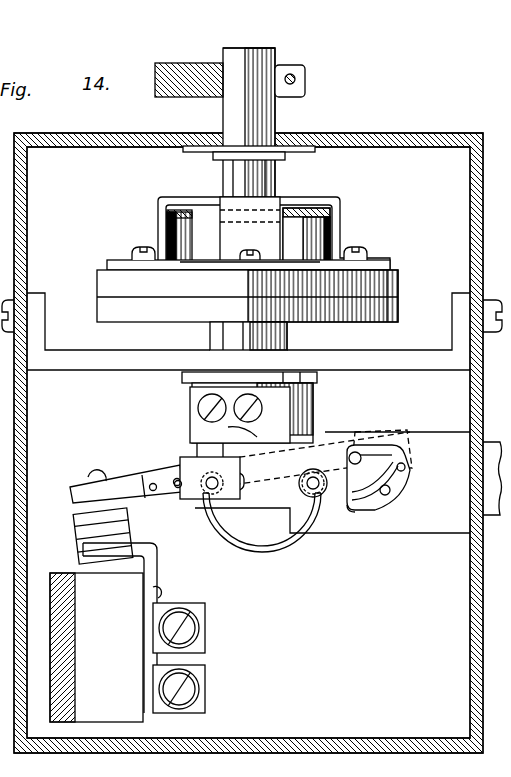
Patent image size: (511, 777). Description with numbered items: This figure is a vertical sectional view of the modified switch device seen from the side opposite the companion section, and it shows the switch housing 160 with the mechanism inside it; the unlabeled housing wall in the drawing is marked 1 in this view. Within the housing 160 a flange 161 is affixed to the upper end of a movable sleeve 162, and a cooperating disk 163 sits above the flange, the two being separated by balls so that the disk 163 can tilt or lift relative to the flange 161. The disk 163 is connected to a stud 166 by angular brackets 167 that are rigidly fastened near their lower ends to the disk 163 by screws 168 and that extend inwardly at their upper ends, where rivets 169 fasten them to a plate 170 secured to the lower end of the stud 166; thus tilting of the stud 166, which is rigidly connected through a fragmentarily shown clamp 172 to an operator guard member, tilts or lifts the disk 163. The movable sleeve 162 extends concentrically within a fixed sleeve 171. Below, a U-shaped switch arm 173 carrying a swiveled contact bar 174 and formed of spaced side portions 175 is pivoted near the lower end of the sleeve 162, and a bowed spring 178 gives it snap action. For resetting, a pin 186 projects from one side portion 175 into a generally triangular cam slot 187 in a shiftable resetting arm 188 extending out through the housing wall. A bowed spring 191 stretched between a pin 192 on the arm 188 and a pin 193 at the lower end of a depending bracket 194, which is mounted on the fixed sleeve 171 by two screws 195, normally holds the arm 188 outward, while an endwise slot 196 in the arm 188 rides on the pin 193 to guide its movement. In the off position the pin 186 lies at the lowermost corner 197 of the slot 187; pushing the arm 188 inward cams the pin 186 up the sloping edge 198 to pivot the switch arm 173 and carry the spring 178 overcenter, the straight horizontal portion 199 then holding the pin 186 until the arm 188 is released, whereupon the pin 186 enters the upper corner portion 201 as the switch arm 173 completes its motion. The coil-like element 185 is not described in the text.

The housing 1 is at (472, 620).
The switch housing 160 is at (268, 245).
The flange 161 is at (386, 306).
The movable sleeve 162 is at (287, 334).
The disk 163 is at (397, 280).
The stud 166 is at (276, 50).
The angular brackets 167 is at (162, 212).
The screws 168 is at (145, 247).
The rivets 169 is at (286, 195).
The plate 170 is at (285, 239).
The fixed sleeve 171 is at (305, 398).
The clamp 172 is at (175, 68).
The U-shaped switch arm 173 is at (152, 497).
The contact bar 174 is at (83, 523).
The side portions 175 is at (338, 438).
The bowed spring 178 is at (378, 503).
The coil 185 is at (83, 548).
The pin 186 is at (357, 452).
The cam slot 187 is at (371, 513).
The resetting arm 188 is at (443, 523).
The bowed spring 191 is at (266, 553).
The pin 192 is at (318, 477).
The pin 193 is at (214, 488).
The depending bracket 194 is at (203, 428).
The screws 195 is at (232, 423).
The endwise slot 196 is at (176, 488).
The lowermost corner 197 is at (355, 517).
The sloping edge 198 is at (391, 492).
The straight horizontal portion 199 is at (404, 467).
The upper corner portion 201 is at (382, 449).